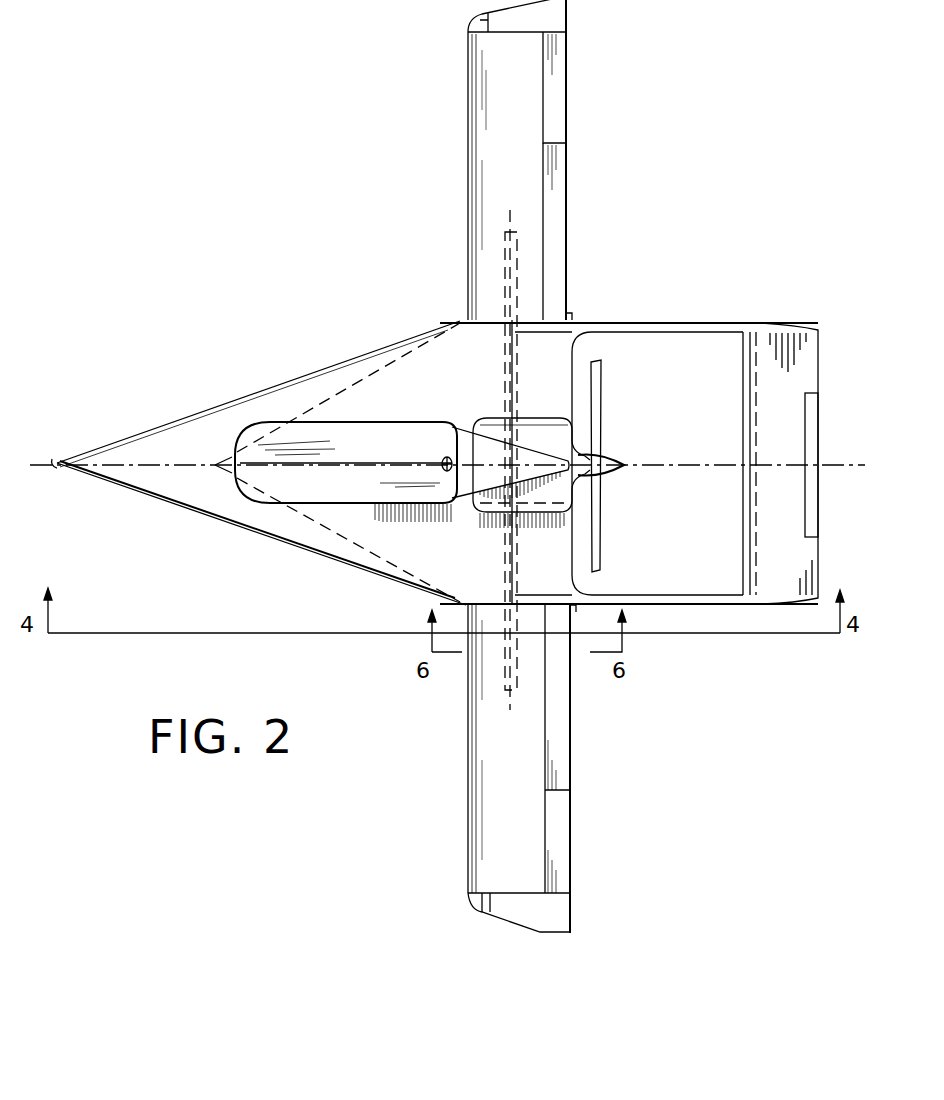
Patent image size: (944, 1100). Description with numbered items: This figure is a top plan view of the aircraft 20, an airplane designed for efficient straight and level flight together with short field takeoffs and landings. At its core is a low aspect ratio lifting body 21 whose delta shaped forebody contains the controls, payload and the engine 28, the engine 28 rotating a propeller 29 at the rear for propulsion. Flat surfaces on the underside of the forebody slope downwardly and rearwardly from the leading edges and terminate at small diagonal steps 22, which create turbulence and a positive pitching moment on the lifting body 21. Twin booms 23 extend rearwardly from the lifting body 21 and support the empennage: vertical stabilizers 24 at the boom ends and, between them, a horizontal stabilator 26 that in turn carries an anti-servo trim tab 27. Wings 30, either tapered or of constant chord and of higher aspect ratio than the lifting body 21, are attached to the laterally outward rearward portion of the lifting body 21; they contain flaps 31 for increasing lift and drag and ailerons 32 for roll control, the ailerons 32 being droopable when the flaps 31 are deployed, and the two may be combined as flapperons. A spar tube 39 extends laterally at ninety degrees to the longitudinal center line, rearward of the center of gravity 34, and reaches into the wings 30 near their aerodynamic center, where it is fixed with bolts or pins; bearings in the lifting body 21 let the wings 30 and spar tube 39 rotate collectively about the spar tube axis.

The aircraft 20 is at (226, 320).
The lifting body 21 is at (360, 493).
The diagonal steps 22 is at (378, 376).
The twin booms 23 is at (682, 320).
The vertical stabilizers 24 is at (782, 320).
The horizontal stabilator 26 is at (796, 433).
The anti-servo trim tab 27 is at (812, 437).
The engine 28 is at (545, 428).
The propeller 29 is at (600, 407).
The wings 30 is at (528, 161).
The flaps 31 is at (562, 233).
The ailerons 32 is at (568, 90).
The center of gravity 34 is at (441, 460).
The spar tube 39 is at (500, 355).